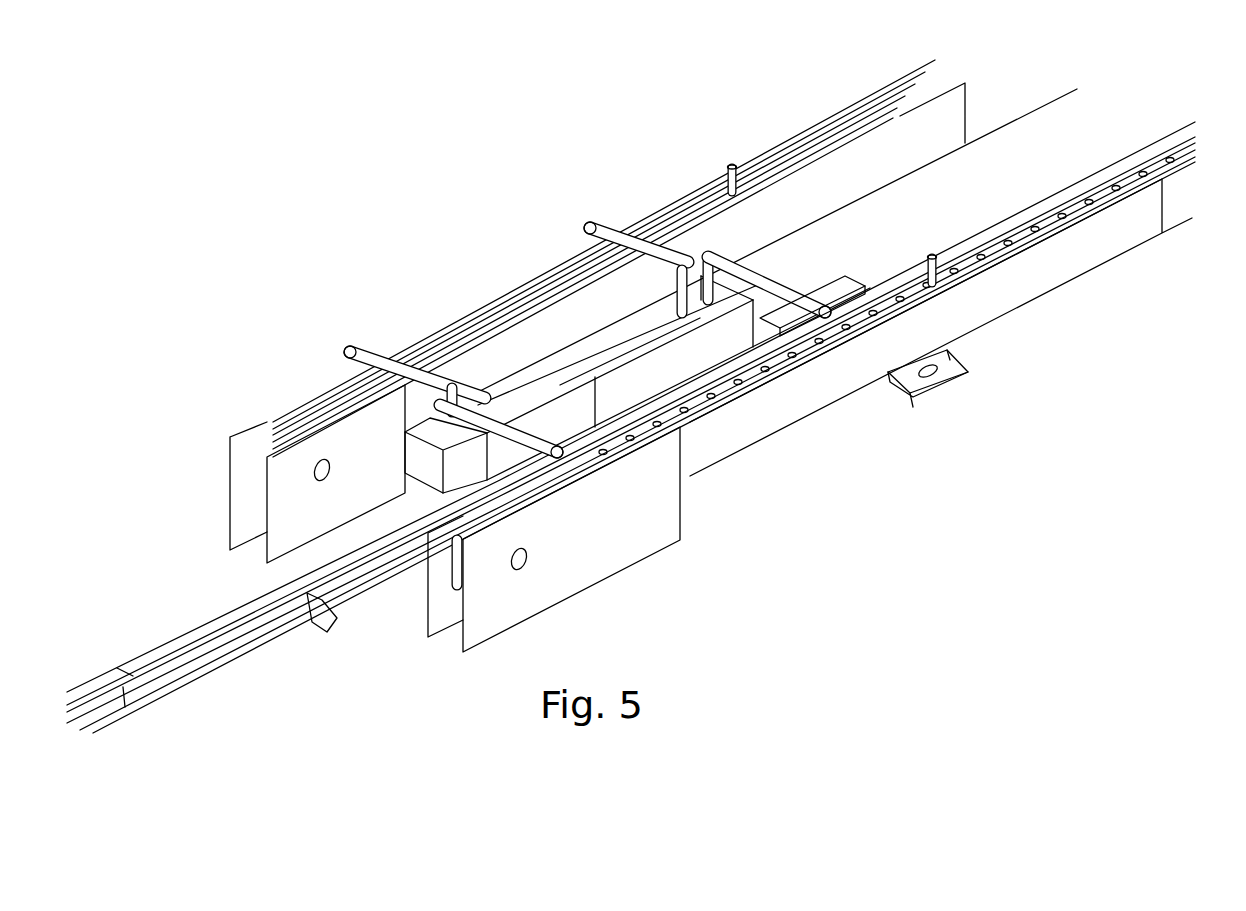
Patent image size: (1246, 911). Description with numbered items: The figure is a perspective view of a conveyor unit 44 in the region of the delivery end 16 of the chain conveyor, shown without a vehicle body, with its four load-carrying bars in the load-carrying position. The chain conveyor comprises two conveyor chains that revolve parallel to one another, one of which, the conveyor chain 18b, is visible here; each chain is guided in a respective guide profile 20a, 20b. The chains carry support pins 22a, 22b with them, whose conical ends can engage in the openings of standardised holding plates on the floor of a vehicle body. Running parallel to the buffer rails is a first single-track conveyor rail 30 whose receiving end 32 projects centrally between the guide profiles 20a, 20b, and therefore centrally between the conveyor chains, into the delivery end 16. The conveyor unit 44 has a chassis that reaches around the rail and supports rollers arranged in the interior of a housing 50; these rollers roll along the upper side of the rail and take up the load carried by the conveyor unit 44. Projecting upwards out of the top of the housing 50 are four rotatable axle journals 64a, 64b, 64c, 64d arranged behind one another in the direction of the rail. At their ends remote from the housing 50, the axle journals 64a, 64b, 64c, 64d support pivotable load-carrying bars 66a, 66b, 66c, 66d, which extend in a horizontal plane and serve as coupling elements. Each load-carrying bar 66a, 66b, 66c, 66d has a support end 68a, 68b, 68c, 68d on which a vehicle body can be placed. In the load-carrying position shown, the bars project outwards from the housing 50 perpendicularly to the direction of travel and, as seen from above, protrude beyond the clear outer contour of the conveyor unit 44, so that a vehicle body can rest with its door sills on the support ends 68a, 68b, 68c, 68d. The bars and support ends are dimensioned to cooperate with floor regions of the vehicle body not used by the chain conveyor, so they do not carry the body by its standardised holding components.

The delivery end 16 is at (468, 220).
The conveyor chain 18b is at (813, 353).
The guide profile 20a is at (937, 127).
The guide profile 20b is at (780, 413).
The support pin 22a is at (300, 405).
The support pin 22b is at (950, 270).
The first single-track conveyor rail 30 is at (165, 677).
The receiving end 32 is at (855, 262).
The conveyor unit 44 is at (727, 357).
The housing 50 is at (765, 367).
The axle journal 64a is at (430, 470).
The axle journal 64b is at (547, 357).
The axle journal 64c is at (600, 298).
The axle journal 64d is at (787, 285).
The load-carrying bar 66a is at (340, 580).
The load-carrying bar 66b is at (452, 388).
The load-carrying bar 66c is at (680, 270).
The load-carrying bar 66d is at (783, 270).
The support end 68a is at (573, 450).
The support end 68b is at (343, 343).
The support end 68c is at (592, 222).
The support end 68d is at (862, 337).